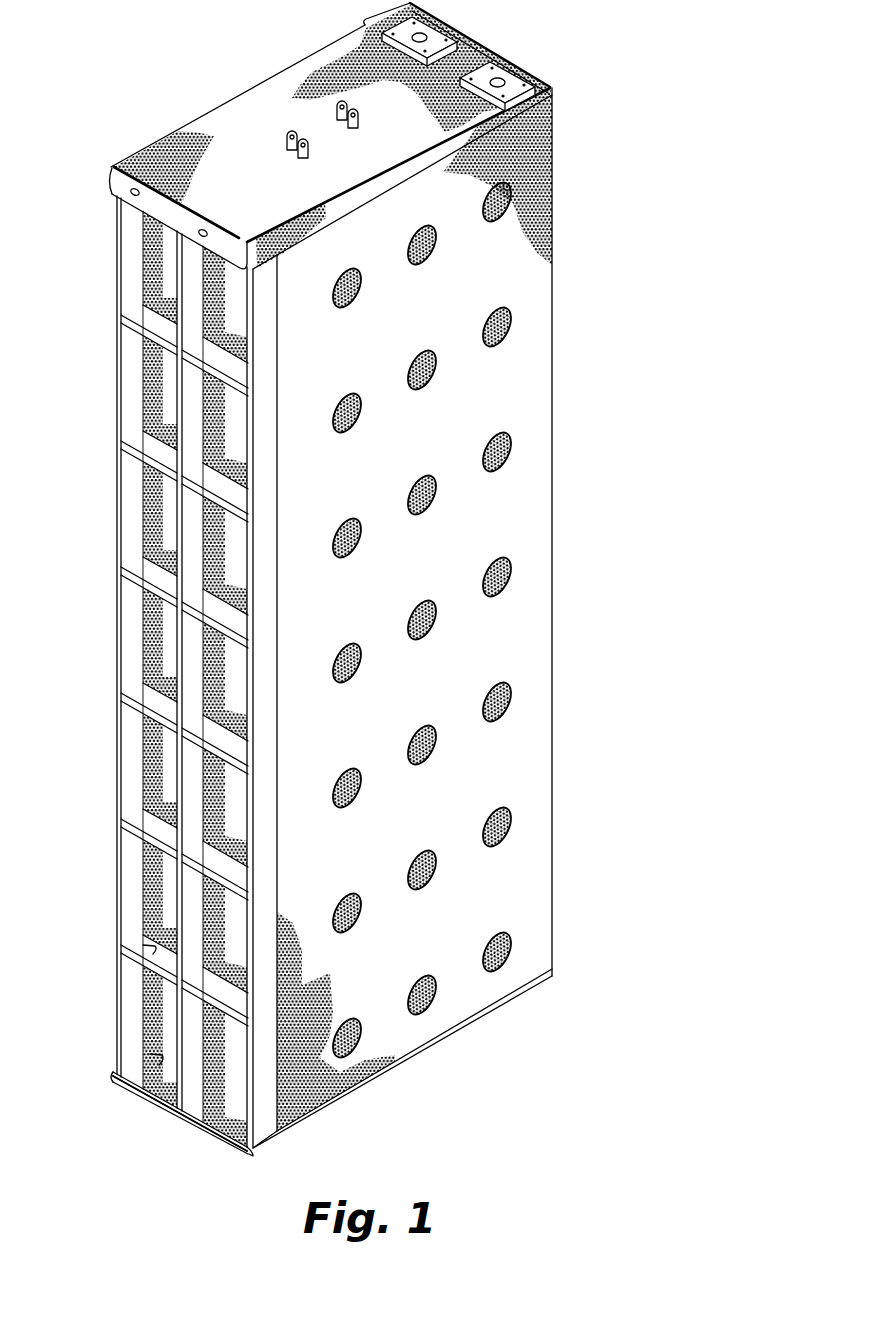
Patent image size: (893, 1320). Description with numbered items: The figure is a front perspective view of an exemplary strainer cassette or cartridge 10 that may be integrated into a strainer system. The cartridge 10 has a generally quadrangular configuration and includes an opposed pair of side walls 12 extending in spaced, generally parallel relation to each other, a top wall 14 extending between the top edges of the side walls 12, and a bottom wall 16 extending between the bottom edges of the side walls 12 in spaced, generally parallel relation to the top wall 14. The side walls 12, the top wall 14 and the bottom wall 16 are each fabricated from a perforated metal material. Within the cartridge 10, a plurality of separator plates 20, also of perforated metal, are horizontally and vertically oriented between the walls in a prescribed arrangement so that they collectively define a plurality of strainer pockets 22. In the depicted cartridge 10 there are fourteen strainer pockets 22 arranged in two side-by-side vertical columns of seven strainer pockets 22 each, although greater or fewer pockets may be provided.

The strainer cassette or cartridge 10 is at (195, 55).
The side walls 12 is at (143, 383).
The top wall 14 is at (278, 115).
The bottom wall 16 is at (237, 1098).
The separator plates 20 is at (138, 697).
The strainer pockets 22 is at (150, 1052).